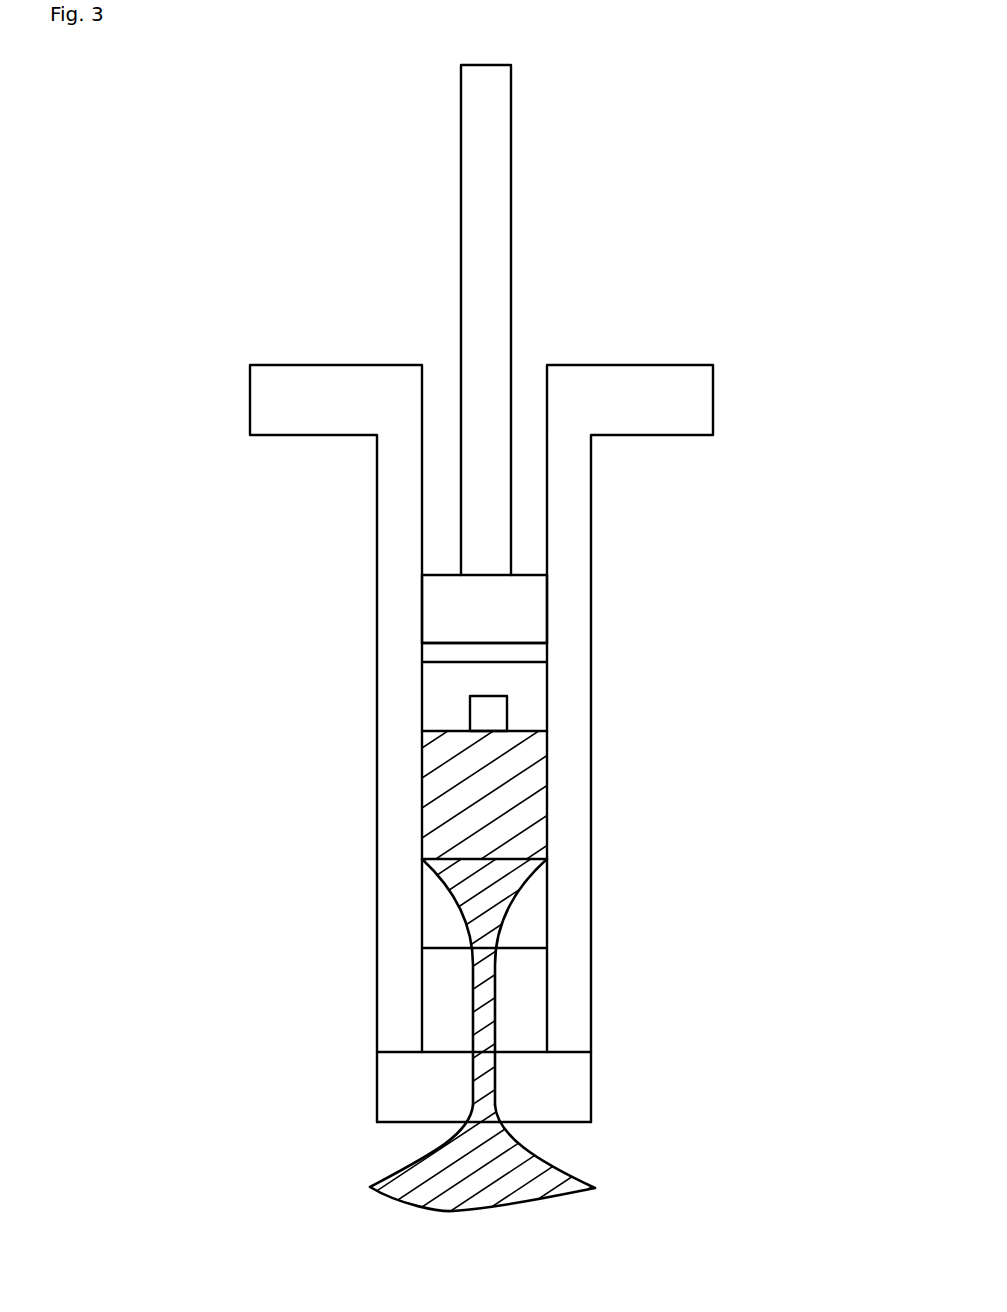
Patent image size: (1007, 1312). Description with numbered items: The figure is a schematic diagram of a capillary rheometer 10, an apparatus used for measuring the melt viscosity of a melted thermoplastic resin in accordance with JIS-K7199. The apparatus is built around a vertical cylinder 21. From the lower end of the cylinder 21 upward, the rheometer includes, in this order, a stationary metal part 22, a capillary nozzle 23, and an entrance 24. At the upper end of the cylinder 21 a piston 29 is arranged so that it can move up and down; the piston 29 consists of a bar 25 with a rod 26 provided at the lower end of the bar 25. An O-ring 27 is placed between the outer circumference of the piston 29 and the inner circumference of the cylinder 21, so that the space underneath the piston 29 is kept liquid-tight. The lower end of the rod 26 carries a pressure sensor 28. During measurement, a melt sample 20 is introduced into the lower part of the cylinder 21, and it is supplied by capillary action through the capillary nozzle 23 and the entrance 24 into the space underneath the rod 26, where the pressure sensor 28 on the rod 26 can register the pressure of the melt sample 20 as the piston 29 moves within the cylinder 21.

The capillary rheometer 10 is at (139, 136).
The melt sample 20 is at (560, 1185).
The cylinder 21 is at (567, 688).
The stationary metal part 22 is at (547, 1093).
The capillary nozzle 23 is at (522, 1007).
The entrance 24 is at (533, 903).
The bar 25 is at (478, 242).
The rod 26 is at (510, 602).
The O-ring 27 is at (452, 653).
The pressure sensor 28 is at (483, 705).
The piston 29 is at (598, 354).